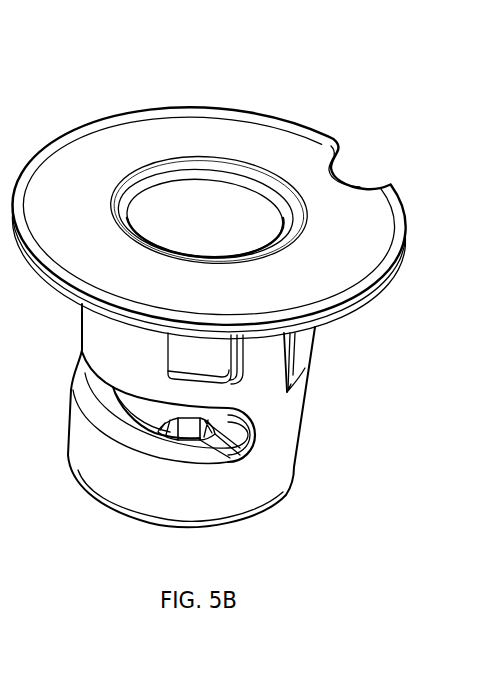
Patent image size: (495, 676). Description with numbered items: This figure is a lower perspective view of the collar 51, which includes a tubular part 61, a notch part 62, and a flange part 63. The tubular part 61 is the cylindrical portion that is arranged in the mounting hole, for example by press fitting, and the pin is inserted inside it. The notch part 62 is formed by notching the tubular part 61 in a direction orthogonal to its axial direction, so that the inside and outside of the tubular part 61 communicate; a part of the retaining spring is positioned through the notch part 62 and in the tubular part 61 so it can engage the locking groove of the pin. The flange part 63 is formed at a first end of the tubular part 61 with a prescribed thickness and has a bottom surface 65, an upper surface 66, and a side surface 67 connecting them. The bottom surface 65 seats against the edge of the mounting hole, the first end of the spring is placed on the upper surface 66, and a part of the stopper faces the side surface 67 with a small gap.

The collar 51 is at (238, 88).
The tubular part 61 is at (290, 425).
The notch part 62 is at (112, 421).
The flange part 63 is at (358, 232).
The bottom surface 65 is at (332, 323).
The upper surface 66 is at (152, 128).
The side surface 67 is at (360, 307).